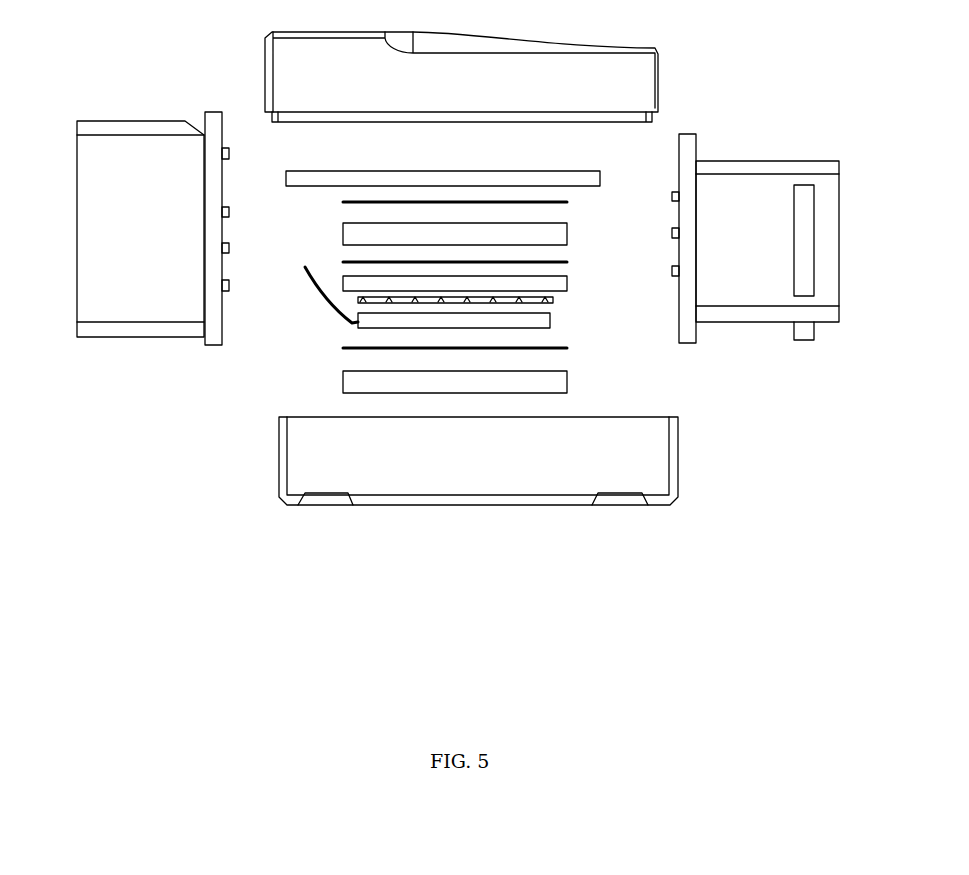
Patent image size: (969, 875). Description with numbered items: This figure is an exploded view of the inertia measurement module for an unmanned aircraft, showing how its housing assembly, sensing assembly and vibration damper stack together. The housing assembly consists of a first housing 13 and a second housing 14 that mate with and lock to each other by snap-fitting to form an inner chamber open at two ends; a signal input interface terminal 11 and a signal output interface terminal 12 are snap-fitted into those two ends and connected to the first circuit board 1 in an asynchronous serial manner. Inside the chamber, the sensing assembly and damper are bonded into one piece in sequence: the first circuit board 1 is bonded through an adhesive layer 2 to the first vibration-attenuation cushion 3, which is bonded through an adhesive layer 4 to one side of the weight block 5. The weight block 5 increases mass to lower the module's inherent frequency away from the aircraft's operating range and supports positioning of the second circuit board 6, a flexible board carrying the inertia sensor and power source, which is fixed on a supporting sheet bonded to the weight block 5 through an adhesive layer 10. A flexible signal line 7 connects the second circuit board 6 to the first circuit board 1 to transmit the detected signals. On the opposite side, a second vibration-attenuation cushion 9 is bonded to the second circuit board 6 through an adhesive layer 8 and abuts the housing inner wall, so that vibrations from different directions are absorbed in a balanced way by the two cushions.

The first circuit board 1 is at (596, 180).
The adhesive layer 2 is at (567, 202).
The first vibration-attenuation cushion 3 is at (567, 235).
The adhesive layer 4 is at (567, 262).
The weight block 5 is at (565, 283).
The second circuit board 6 is at (540, 320).
The flexible signal line 7 is at (312, 305).
The adhesive layer 8 is at (567, 348).
The second vibration-attenuation cushion 9 is at (540, 382).
The adhesive layer 10 is at (553, 300).
The signal input interface terminal 11 is at (88, 179).
The signal output interface terminal 12 is at (832, 191).
The first housing 13 is at (540, 57).
The second housing 14 is at (488, 493).